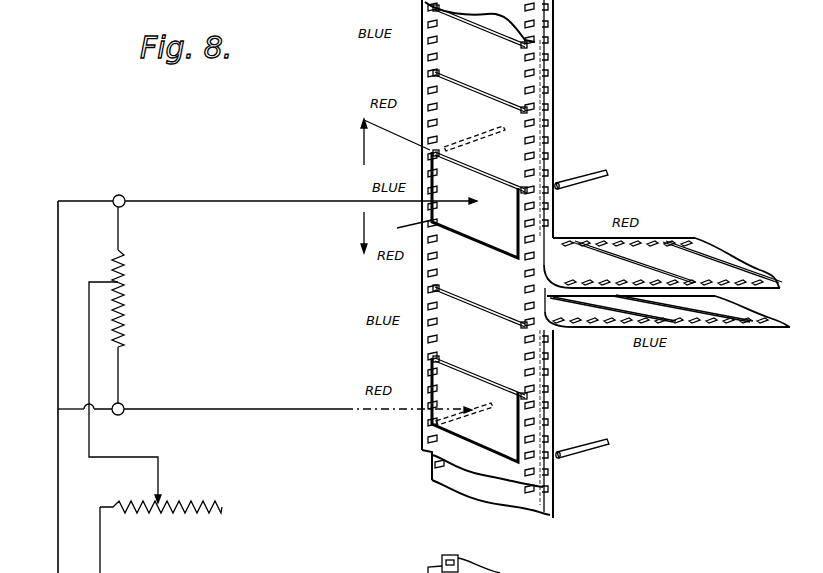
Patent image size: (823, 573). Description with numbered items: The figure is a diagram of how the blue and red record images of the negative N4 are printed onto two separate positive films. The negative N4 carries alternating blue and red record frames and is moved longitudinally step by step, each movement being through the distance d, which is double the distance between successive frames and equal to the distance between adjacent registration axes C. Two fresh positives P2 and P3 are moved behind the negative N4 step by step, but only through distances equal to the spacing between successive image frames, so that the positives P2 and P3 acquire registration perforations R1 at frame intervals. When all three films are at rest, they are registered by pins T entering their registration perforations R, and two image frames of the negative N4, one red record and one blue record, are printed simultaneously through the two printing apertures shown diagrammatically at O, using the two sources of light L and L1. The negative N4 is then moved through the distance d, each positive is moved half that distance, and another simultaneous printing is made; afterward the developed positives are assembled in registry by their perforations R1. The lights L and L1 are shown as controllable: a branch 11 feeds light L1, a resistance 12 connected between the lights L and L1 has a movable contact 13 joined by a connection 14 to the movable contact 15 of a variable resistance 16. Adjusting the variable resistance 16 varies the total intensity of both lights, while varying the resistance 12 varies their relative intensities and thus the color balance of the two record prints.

The branch 11 is at (76, 411).
The resistance 12 is at (122, 281).
The movable contact 13 is at (96, 281).
The connection 14 is at (114, 457).
The movable contact 15 is at (160, 475).
The variable resistance 16 is at (194, 513).
The light L is at (124, 197).
The light L1 is at (123, 405).
The negative N4 is at (421, 352).
The printing aperture O is at (475, 307).
The registration pin T is at (460, 143).
The registration axis C is at (577, 478).
The registration perforation R is at (433, 153).
The registration perforation R1 is at (550, 190).
The distance d is at (391, 186).
The positive P2 is at (556, 44).
The positive P3 is at (620, 333).